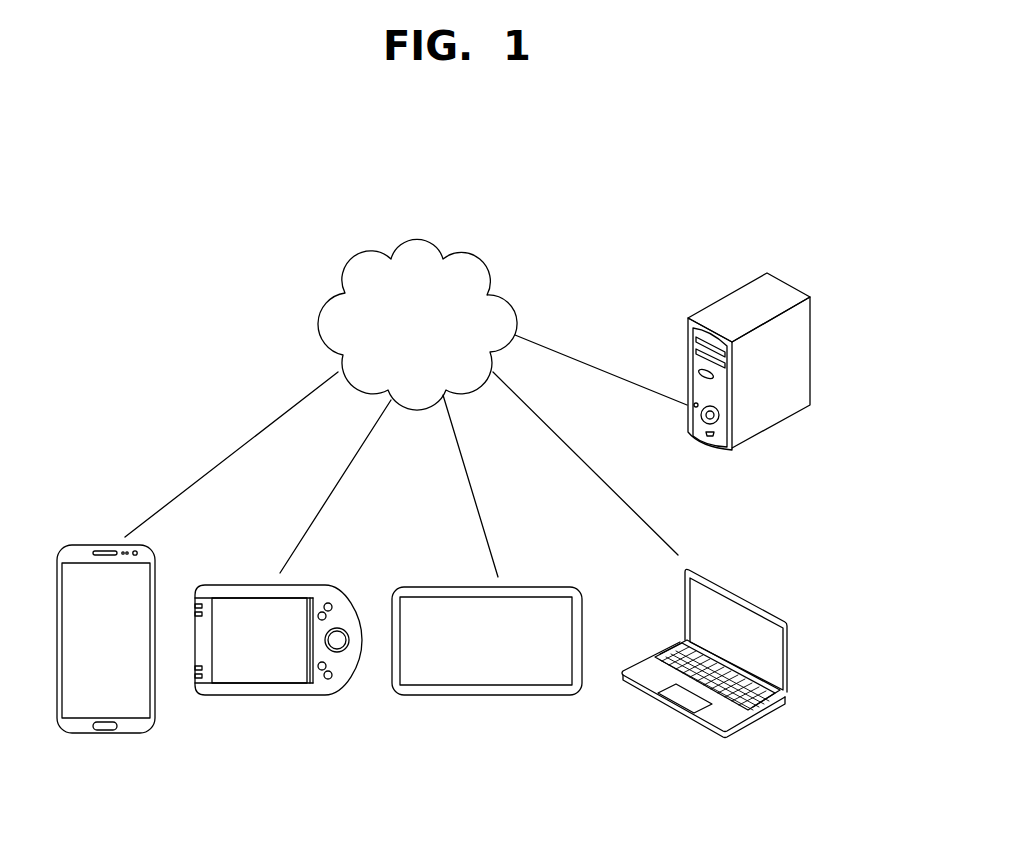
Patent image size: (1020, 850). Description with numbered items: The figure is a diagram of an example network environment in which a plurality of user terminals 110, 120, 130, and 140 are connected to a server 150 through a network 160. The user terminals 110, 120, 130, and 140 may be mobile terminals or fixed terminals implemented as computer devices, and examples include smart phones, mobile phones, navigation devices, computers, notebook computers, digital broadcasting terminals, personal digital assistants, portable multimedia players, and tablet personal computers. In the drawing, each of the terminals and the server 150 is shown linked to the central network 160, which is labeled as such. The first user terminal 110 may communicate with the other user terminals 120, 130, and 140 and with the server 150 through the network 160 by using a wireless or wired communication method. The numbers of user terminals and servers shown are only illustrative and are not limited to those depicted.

The first user terminal 110 is at (105, 737).
The user terminal 120 is at (265, 697).
The user terminal 130 is at (486, 697).
The user terminal 140 is at (790, 661).
The server 150 is at (815, 351).
The network 160 is at (417, 237).